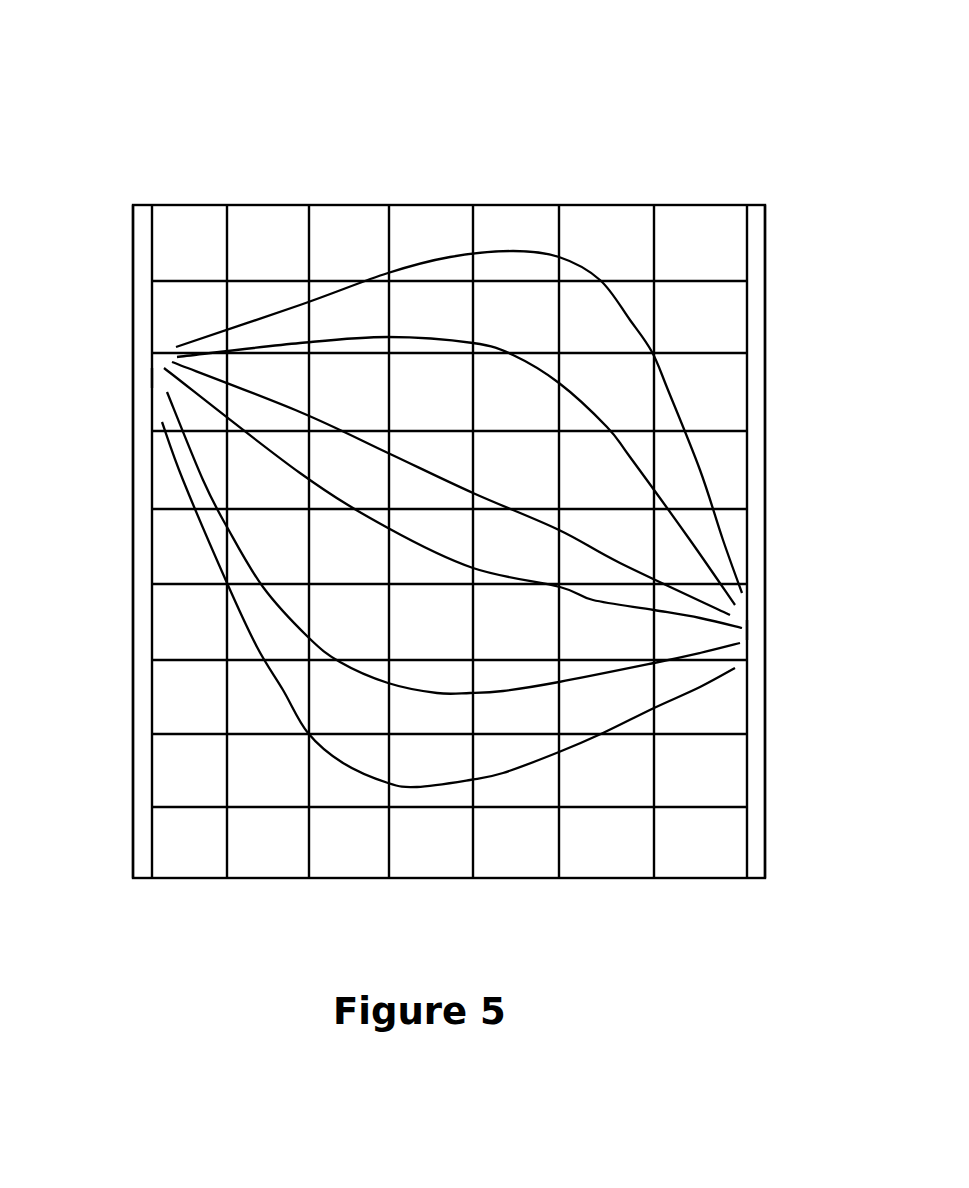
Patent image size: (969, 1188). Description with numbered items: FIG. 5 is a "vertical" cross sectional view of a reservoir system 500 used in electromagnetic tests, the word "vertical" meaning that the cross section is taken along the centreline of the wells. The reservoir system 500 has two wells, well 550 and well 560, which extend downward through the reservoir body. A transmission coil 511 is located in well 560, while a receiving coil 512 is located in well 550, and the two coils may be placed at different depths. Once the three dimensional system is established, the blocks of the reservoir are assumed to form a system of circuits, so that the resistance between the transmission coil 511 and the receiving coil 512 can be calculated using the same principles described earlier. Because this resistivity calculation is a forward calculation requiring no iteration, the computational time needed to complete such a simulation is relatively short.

The reservoir system 500 is at (527, 930).
The well 550 is at (151, 173).
The well 560 is at (776, 175).
The receiving coil 512 is at (145, 377).
The transmission coil 511 is at (753, 629).